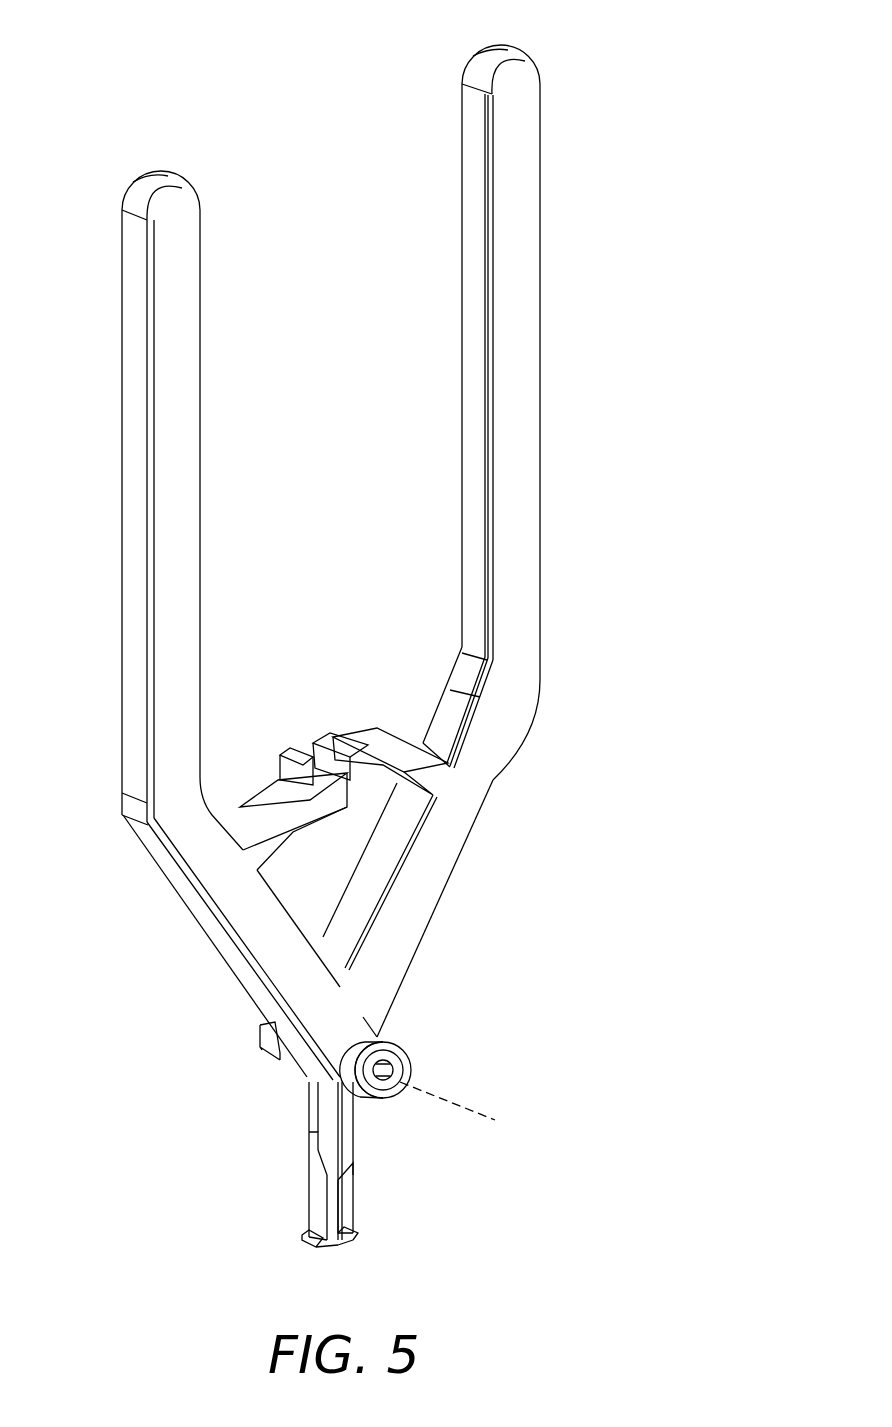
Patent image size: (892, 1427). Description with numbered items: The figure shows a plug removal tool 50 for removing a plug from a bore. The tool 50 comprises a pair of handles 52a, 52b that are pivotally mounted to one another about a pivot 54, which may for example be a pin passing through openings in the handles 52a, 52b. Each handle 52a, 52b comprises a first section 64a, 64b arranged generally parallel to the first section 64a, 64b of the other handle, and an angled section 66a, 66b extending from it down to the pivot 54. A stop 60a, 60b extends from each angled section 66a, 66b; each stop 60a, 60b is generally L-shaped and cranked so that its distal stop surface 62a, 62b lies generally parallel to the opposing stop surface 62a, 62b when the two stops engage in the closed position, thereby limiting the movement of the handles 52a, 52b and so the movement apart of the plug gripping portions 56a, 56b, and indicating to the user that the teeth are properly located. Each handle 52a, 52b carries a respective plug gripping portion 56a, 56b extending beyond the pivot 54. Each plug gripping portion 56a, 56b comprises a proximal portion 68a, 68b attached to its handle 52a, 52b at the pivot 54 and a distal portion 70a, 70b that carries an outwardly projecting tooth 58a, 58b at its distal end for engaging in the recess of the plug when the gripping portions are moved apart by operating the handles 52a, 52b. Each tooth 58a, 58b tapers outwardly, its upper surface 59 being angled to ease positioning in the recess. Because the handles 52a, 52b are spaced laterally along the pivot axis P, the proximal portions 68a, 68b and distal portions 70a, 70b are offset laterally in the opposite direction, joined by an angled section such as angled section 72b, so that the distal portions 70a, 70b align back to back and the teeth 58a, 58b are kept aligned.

The tool 50 is at (198, 70).
The handle 52a is at (528, 652).
The handle 52b is at (165, 767).
The pivot 54 is at (405, 1068).
The plug gripping portion 56a is at (358, 1197).
The plug gripping portion 56b is at (318, 1212).
The tooth 58a is at (352, 1240).
The tooth 58b is at (328, 1246).
The upper surface 59 is at (358, 1232).
The stop 60a is at (382, 730).
The stop 60b is at (280, 787).
The distal surface 62a is at (330, 760).
The distal surface 62b is at (300, 760).
The first section 64a is at (531, 184).
The first section 64b is at (165, 300).
The angled section 66a is at (440, 862).
The angled section 66b is at (200, 905).
The proximal portion 68a is at (310, 1107).
The proximal portion 68b is at (355, 1117).
The distal portion 70a is at (355, 1178).
The distal portion 70b is at (318, 1186).
The angled section 72b is at (318, 1151).
The pivot axis P is at (460, 1092).